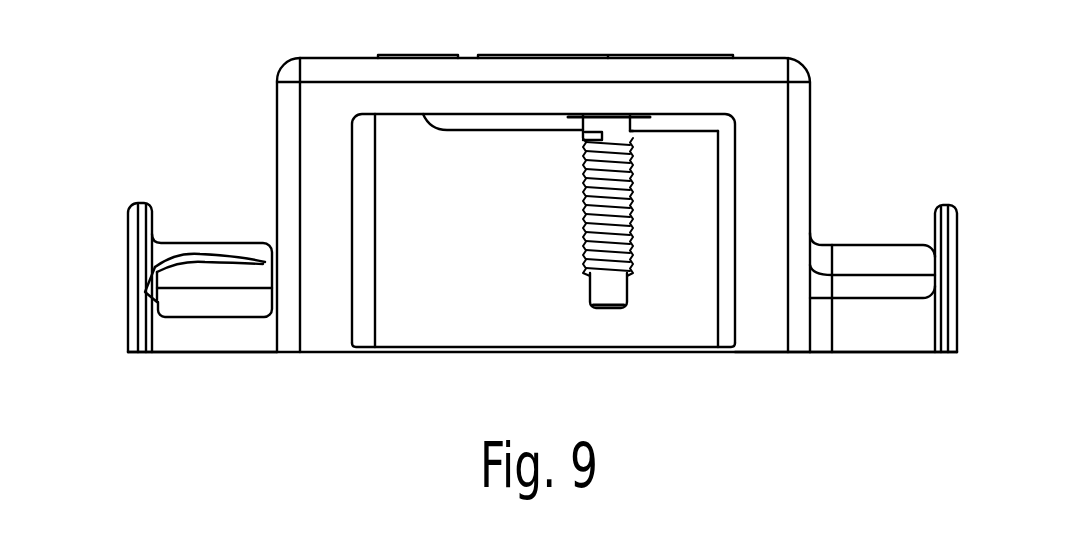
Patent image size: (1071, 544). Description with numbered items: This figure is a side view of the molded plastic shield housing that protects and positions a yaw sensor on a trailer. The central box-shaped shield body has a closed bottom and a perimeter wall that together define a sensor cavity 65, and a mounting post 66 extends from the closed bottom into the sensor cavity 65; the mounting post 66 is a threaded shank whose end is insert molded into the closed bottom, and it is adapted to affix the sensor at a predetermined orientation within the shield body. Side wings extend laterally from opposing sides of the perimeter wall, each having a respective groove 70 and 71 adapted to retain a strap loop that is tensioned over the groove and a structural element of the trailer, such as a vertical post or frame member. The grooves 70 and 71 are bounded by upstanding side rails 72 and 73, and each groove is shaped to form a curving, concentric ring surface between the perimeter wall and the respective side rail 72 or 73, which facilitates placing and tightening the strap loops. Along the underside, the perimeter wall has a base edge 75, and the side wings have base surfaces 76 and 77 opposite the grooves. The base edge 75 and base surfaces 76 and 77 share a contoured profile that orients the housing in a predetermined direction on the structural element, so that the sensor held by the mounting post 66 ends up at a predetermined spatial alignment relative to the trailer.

The sensor cavity 65 is at (516, 157).
The mounting post 66 is at (585, 272).
The groove 70 is at (850, 258).
The groove 71 is at (200, 250).
The side rail 72 is at (947, 205).
The side rail 73 is at (132, 203).
The base edge 75 is at (767, 353).
The base surface 76 is at (880, 352).
The base surface 77 is at (223, 352).